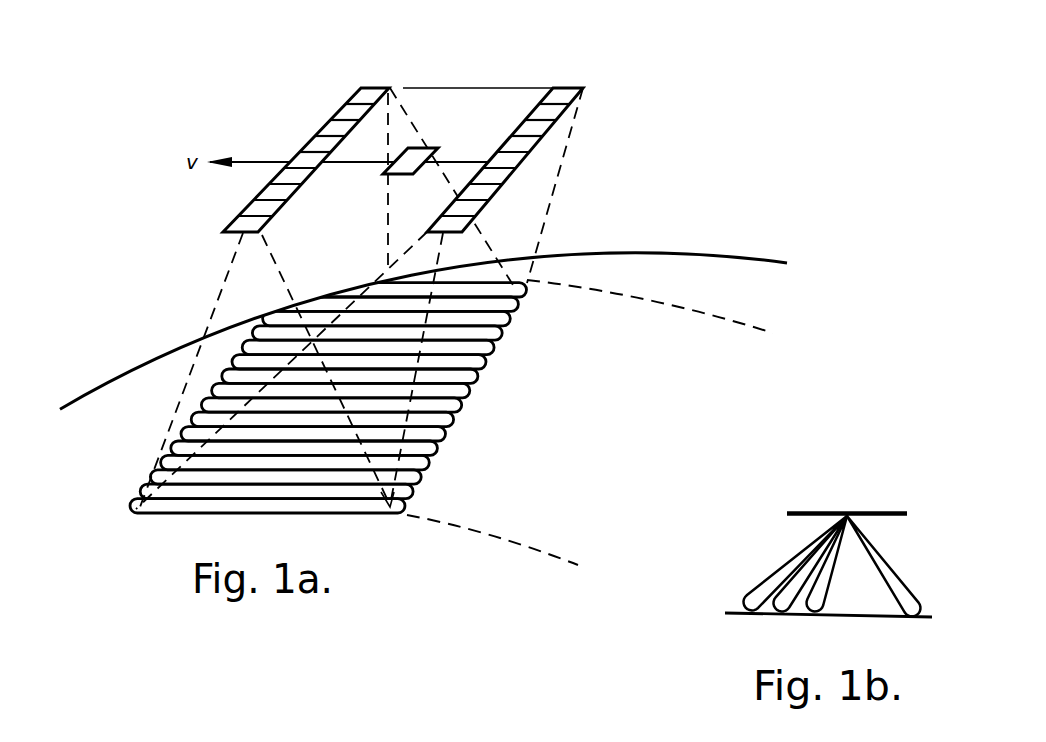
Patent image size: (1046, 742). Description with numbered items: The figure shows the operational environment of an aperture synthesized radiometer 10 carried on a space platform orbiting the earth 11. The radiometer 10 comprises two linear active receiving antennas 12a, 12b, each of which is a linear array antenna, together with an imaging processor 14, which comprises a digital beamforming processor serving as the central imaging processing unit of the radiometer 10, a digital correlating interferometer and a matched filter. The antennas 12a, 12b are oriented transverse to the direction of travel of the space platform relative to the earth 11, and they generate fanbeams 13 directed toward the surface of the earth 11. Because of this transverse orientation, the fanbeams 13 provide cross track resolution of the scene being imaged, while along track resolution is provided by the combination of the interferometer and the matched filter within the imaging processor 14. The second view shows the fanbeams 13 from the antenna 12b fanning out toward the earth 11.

In FIG. 1A, the synthetic aperture radar system 10 is at (645, 147).
In FIG. 1A, the earth surface 11 is at (151, 356).
In FIG. 1B, the earth surface 11 is at (730, 612).
In FIG. 1A, the first antenna array 12a is at (223, 233).
In FIG. 1A, the second antenna array 12b is at (585, 88).
In FIG. 1B, the second antenna array 12b is at (800, 512).
In FIG. 1A, the antenna beams 13 is at (415, 138).
In FIG. 1B, the antenna beams 13 is at (784, 566).
In FIG. 1A, the sensor / receiver element 14 is at (385, 172).